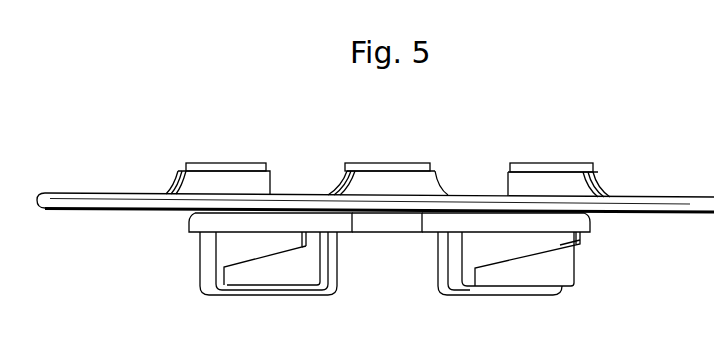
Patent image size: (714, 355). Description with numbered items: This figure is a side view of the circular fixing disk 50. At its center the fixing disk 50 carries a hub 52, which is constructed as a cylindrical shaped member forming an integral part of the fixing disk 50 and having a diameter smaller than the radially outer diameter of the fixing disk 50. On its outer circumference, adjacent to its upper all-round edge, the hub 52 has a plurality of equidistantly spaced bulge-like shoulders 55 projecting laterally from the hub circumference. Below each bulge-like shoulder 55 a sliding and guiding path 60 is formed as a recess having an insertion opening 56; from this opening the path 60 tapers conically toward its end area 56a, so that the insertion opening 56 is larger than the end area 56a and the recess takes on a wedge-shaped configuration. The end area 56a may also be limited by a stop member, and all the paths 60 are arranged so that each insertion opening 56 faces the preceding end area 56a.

The fixing disk 50 is at (72, 194).
The hub 52 is at (464, 293).
The bulge-like shoulder 55 is at (300, 288).
The insertion opening 56 is at (230, 255).
The end area 56a is at (288, 242).
The sliding and guiding path 60 is at (257, 250).